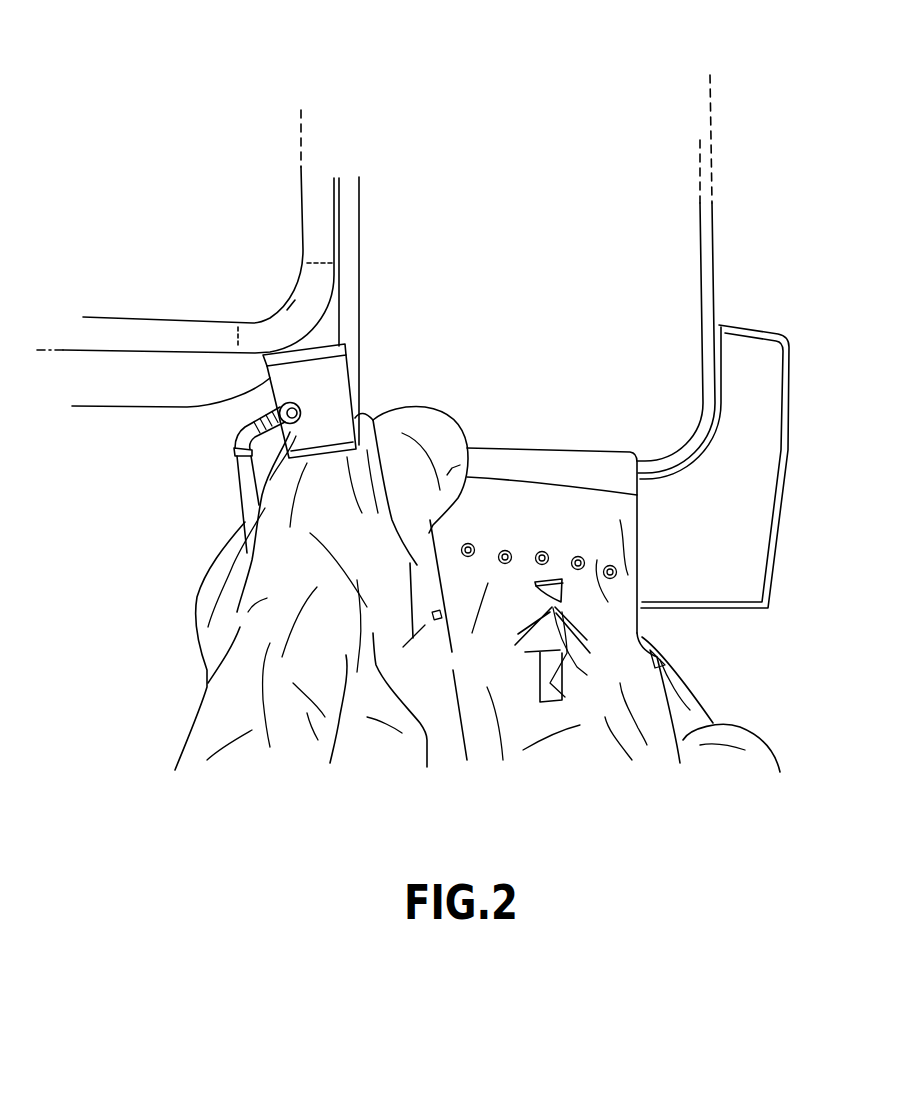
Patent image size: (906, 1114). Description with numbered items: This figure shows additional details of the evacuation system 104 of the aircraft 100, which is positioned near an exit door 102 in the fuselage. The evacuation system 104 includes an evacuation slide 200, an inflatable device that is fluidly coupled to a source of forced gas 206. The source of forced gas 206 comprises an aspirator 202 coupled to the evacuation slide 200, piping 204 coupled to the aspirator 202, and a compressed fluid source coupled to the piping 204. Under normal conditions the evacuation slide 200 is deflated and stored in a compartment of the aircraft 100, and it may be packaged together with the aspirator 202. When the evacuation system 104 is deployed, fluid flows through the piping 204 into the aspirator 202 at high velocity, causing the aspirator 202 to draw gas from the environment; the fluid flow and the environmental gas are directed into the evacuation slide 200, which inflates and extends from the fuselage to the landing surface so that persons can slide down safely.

The aircraft 100 is at (420, 90).
The exit door 102 is at (693, 205).
The evacuation system 104 is at (143, 588).
The evacuation slide 200 is at (323, 750).
The aspirator 202 is at (337, 392).
The piping 204 is at (243, 485).
The source of forced gas 206 is at (293, 336).